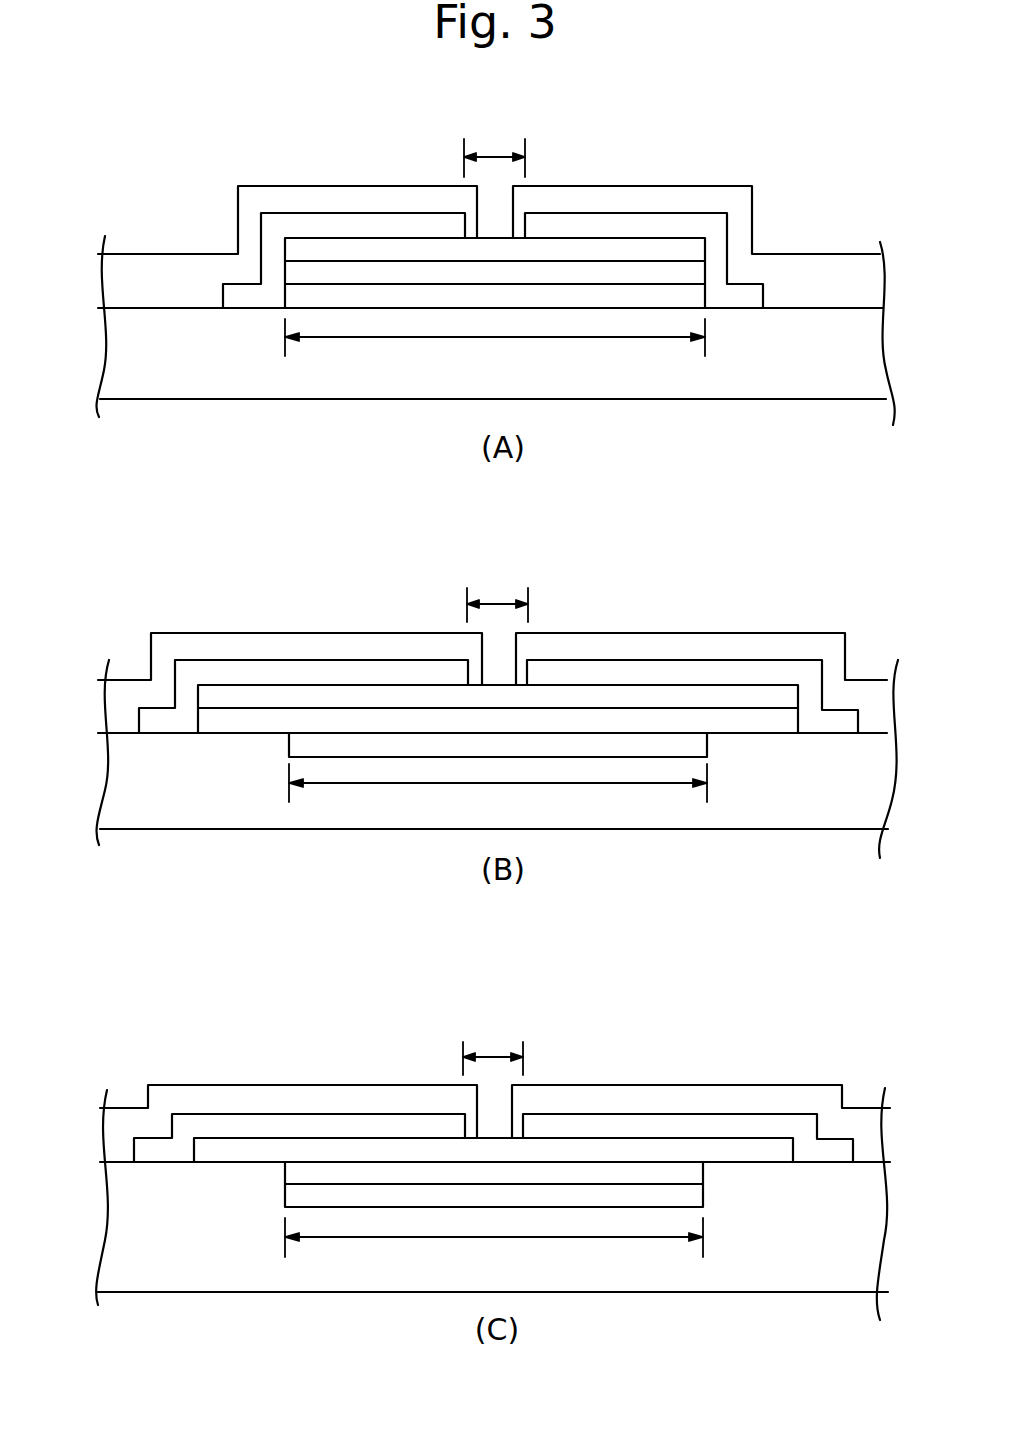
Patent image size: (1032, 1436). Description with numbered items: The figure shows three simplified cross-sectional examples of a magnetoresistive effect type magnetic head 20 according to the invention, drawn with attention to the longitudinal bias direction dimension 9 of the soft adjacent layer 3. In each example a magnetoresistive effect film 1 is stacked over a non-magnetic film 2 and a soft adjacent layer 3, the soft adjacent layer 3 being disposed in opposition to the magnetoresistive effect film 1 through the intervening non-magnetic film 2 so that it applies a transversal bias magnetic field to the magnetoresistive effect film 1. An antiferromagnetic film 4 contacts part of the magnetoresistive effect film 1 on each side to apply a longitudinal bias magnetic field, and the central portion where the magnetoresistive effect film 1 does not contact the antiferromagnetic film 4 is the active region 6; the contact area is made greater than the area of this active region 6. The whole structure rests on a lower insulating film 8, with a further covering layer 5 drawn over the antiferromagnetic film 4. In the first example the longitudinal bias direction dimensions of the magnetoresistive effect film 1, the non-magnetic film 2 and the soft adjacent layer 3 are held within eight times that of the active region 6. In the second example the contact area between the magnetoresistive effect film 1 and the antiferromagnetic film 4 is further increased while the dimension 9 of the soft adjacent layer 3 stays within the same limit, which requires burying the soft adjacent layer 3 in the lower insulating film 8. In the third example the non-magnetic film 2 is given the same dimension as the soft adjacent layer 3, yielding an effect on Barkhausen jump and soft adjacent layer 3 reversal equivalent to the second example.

The magnetoresistive effect film 1 is at (548, 245).
The non-magnetic film 2 is at (597, 270).
The soft adjacent layer 3 is at (657, 295).
The antiferromagnetic film 4 is at (292, 228).
The protective insulating layer 5 is at (147, 277).
The active region 6 is at (497, 153).
The lower insulating film 8 is at (497, 778).
The longitudinal bias direction dimension 9 is at (523, 340).
The magnetic head 20 is at (347, 114).